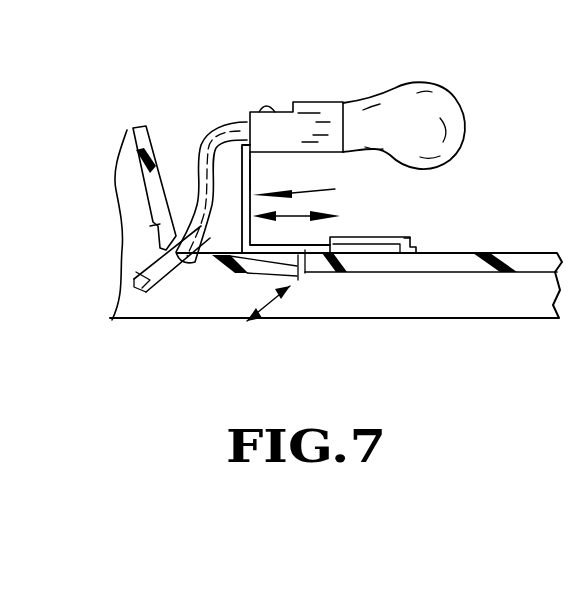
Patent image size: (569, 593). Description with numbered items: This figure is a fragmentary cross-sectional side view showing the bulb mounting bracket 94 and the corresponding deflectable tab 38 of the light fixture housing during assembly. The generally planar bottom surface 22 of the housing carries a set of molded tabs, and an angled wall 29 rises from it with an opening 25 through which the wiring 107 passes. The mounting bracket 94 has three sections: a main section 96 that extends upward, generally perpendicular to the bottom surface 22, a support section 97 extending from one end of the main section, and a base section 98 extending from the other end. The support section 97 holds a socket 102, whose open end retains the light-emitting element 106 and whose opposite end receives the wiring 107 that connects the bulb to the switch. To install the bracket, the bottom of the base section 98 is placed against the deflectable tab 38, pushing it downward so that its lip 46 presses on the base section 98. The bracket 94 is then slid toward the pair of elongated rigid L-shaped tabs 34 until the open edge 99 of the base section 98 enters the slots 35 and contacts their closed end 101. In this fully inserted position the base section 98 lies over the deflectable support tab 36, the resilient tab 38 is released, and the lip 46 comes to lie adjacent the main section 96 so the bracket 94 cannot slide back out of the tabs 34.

The planar bottom surface 22 is at (541, 252).
The opening 25 is at (150, 250).
The angled wall 29 is at (158, 155).
The L-shaped tabs 34 is at (390, 237).
The slots 35 is at (393, 251).
The support tab 36 is at (372, 262).
The deflectable tab 38 is at (247, 267).
The lip 46 is at (304, 274).
The mounting bracket 94 is at (313, 189).
The main section 96 is at (251, 175).
The support section 97 is at (270, 150).
The base section 98 is at (210, 275).
The open edge 99 is at (331, 250).
The closed end 101 is at (412, 243).
The socket 102 is at (323, 102).
The light-emitting element 106 is at (427, 105).
The wiring 107 is at (203, 137).